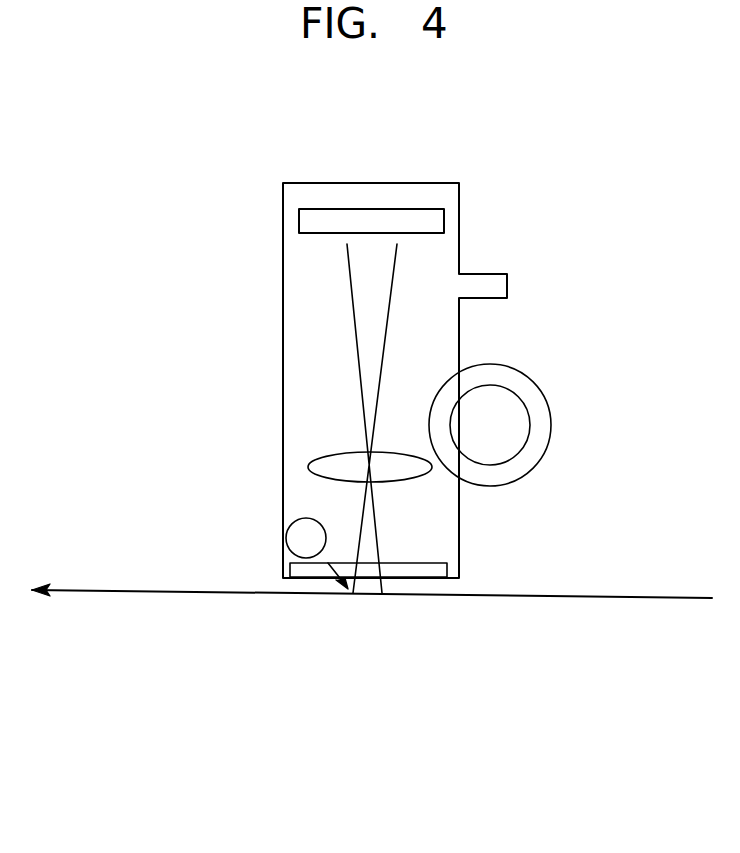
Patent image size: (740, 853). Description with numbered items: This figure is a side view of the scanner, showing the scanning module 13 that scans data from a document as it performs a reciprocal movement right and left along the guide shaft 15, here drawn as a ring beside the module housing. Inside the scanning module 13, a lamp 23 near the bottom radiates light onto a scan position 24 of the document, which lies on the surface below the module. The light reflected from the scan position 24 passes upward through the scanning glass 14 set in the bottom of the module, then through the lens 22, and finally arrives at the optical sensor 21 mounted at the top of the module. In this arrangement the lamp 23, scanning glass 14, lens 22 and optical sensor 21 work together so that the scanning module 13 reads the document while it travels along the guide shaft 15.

The scanning module 13 is at (296, 338).
The scanning glass 14 is at (425, 565).
The guide shaft 15 is at (522, 422).
The optical sensor 21 is at (442, 217).
The lens 22 is at (322, 462).
The lamp 23 is at (290, 538).
The scan position 24 is at (368, 598).